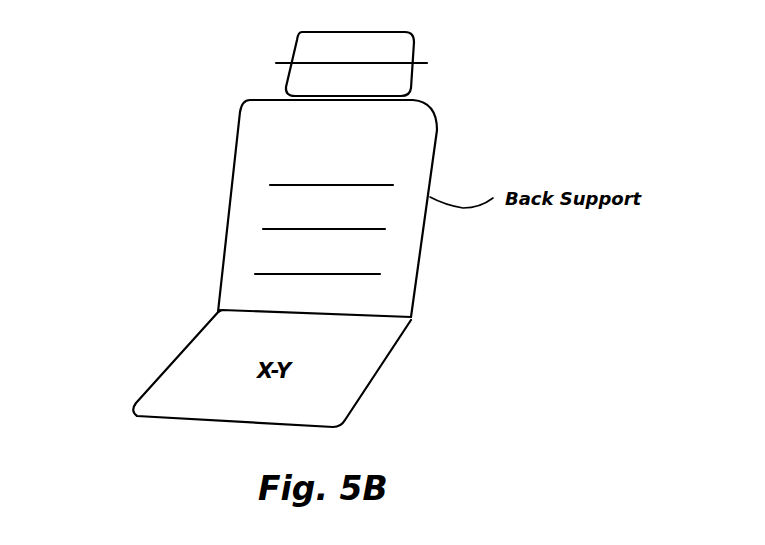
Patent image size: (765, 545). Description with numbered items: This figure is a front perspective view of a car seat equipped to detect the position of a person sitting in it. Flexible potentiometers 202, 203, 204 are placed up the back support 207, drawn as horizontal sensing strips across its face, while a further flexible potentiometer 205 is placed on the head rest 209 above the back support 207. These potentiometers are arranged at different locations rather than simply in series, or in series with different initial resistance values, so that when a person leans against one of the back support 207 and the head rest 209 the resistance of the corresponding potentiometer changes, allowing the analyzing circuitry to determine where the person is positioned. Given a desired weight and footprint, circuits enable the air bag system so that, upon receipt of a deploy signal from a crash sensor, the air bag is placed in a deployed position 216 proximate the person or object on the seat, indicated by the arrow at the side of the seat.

The flexible potentiometer 202 is at (338, 274).
The flexible potentiometer 203 is at (360, 229).
The flexible potentiometer 204 is at (357, 185).
The flexible potentiometer 205 is at (387, 60).
The back support 207 is at (235, 163).
The head rest 209 is at (290, 62).
The deployed position 216 is at (150, 257).